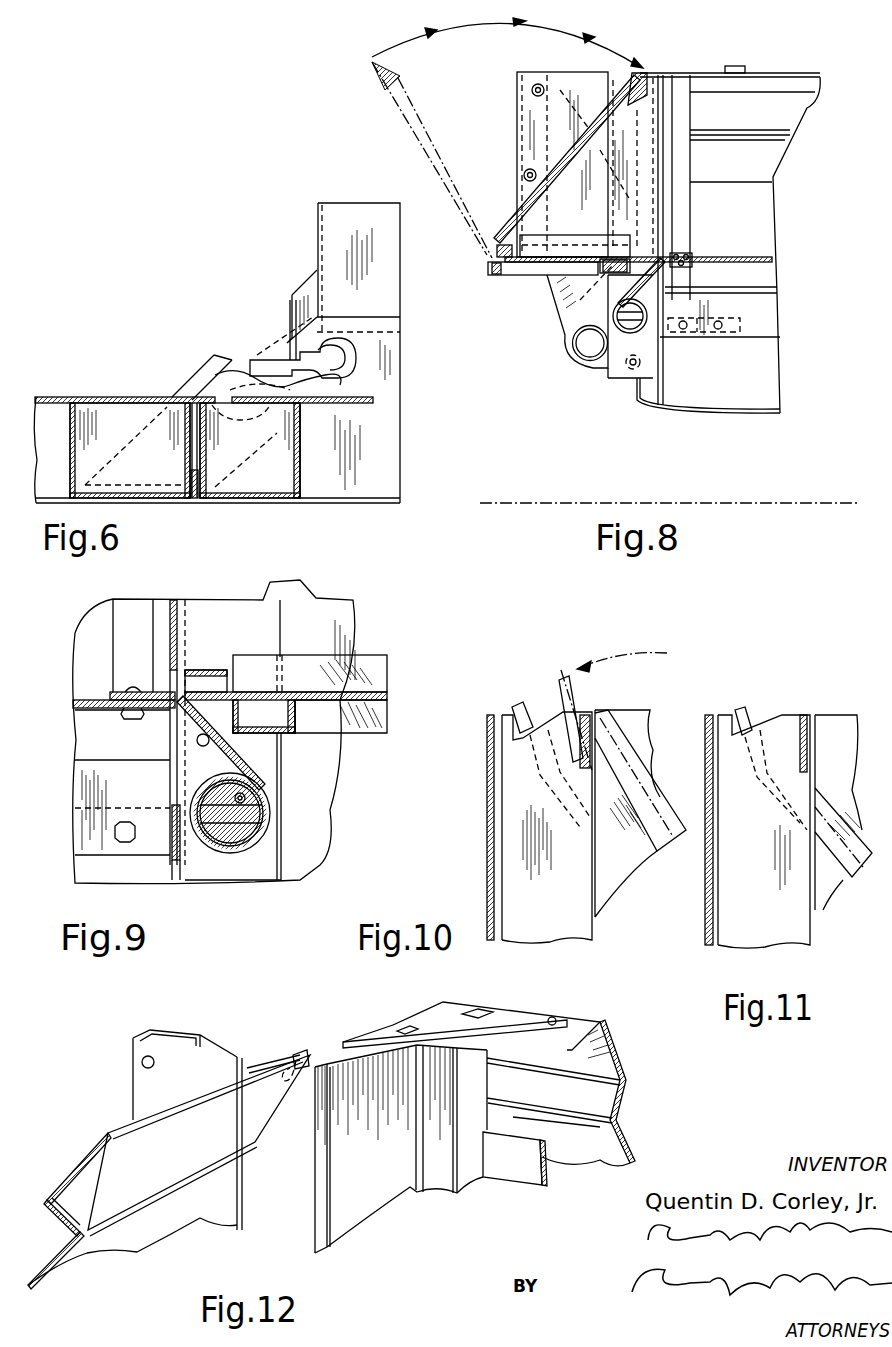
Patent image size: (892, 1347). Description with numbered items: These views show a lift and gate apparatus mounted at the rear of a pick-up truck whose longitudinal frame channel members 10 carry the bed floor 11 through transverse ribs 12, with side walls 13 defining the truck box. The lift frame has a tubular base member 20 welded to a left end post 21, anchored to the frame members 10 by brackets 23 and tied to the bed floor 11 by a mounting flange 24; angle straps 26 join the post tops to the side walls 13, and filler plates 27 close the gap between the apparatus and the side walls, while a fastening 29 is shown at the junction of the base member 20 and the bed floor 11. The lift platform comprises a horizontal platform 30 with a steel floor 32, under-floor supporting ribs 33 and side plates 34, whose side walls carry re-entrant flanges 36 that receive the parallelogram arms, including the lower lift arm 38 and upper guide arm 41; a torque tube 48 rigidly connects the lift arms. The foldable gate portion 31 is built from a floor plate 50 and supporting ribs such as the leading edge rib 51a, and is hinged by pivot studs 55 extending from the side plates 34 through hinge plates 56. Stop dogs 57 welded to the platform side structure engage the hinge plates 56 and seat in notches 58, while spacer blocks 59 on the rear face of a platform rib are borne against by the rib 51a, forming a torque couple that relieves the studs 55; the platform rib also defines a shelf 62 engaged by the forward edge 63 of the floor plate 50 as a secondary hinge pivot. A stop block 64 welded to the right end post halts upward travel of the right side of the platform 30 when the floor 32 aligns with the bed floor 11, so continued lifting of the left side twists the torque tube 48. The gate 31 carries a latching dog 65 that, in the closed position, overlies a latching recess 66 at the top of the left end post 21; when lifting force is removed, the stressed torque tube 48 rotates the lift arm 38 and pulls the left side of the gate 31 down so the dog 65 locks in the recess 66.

In FIG. 8, the longitudinal frame channel members 10 is at (755, 328).
In FIG. 9, the longitudinal frame channel members 10 is at (103, 774).
In FIG. 8, the bed floor 11 is at (750, 258).
In FIG. 9, the bed floor 11 is at (84, 698).
In FIG. 9, the transverse channel or angle ribs 12 is at (172, 738).
In FIG. 8, the side walls 13 is at (770, 82).
In FIG. 12, the side walls 13 is at (600, 1062).
In FIG. 8, the base member 20 is at (660, 302).
In FIG. 9, the base member 20 is at (268, 831).
In FIG. 8, the left end post 21 is at (650, 115).
In FIG. 10, the left end post 21 is at (555, 940).
In FIG. 11, the left end post 21 is at (735, 940).
In FIG. 8, the brackets 23 is at (690, 320).
In FIG. 9, the brackets 23 is at (193, 847).
In FIG. 9, the mounting flange 24 is at (255, 771).
In FIG. 8, the angle straps 26 is at (685, 70).
In FIG. 12, the angle straps 26 is at (440, 1035).
In FIG. 9, the filler plates 27 is at (170, 627).
In FIG. 10, the filler plates 27 is at (487, 828).
In FIG. 11, the filler plates 27 is at (705, 932).
In FIG. 12, the filler plates 27 is at (367, 1070).
In FIG. 8, the nut 29 is at (677, 257).
In FIG. 6, the horizontal platform 30 is at (402, 467).
In FIG. 8, the horizontal platform 30 is at (536, 276).
In FIG. 6, the foldable gate portion 31 is at (94, 390).
In FIG. 8, the foldable gate portion 31 is at (506, 214).
In FIG. 10, the foldable gate portion 31 is at (641, 858).
In FIG. 11, the foldable gate portion 31 is at (866, 870).
In FIG. 12, the foldable gate portion 31 is at (63, 1172).
In FIG. 6, the floor 32 is at (367, 395).
In FIG. 9, the floor 32 is at (375, 690).
In FIG. 9, the under-floor supporting ribs 33 is at (295, 715).
In FIG. 6, the side plates 34 is at (383, 429).
In FIG. 9, the side plates 34 is at (366, 658).
In FIG. 6, the re-entrant outer flanges 36 is at (362, 192).
In FIG. 8, the re-entrant outer flanges 36 is at (578, 60).
In FIG. 9, the re-entrant outer flanges 36 is at (247, 585).
In FIG. 10, the re-entrant outer flanges 36 is at (637, 715).
In FIG. 11, the re-entrant outer flanges 36 is at (842, 720).
In FIG. 12, the re-entrant outer flanges 36 is at (143, 1090).
In FIG. 8, the lower lift arm 38 is at (568, 303).
In FIG. 12, the lower lift arm 38 is at (180, 1030).
In FIG. 9, the upper parallel guide arm 41 is at (296, 585).
In FIG. 8, the torque tube 48 is at (587, 343).
In FIG. 6, the floor plate 50 is at (146, 375).
In FIG. 6, the leading edge support rib 51a is at (150, 498).
In FIG. 6, the pivot studs 55 is at (258, 389).
In FIG. 6, the hinge plates 56 is at (202, 370).
In FIG. 6, the stop dogs 57 is at (317, 273).
In FIG. 6, the notches 58 is at (333, 342).
In FIG. 6, the spacer blocks 59 is at (193, 503).
In FIG. 6, the shelf 62 is at (218, 415).
In FIG. 6, the forward edge 63 is at (223, 357).
In FIG. 9, the stop block 64 is at (219, 670).
In FIG. 10, the latching dog 65 is at (519, 704).
In FIG. 11, the latching dog 65 is at (747, 712).
In FIG. 12, the latching dog 65 is at (298, 1052).
In FIG. 10, the latching recess 66 is at (545, 710).
In FIG. 12, the latching recess 66 is at (277, 1058).